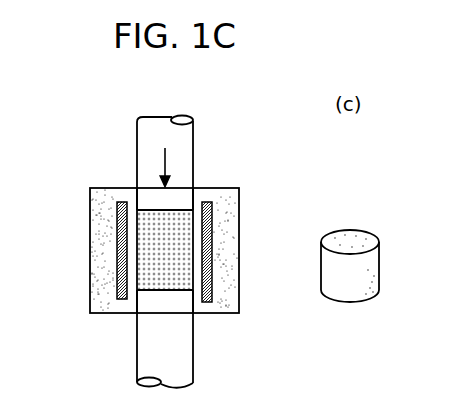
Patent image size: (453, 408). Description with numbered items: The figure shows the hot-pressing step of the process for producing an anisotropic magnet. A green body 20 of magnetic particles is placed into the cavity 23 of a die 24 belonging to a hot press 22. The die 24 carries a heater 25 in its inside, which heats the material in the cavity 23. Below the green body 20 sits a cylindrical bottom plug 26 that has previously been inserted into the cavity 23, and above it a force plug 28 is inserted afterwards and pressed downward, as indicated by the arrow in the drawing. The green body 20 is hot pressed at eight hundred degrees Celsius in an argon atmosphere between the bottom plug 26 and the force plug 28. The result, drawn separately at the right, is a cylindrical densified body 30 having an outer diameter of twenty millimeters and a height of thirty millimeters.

The green body 20 is at (157, 278).
The hot press 22 is at (150, 253).
The cavity 23 is at (193, 224).
The die 24 is at (233, 303).
The heater 25 is at (207, 273).
The cylindrical bottom plug 26 is at (187, 356).
The force plug 28 is at (187, 144).
The cylindrical densified body 30 is at (353, 206).